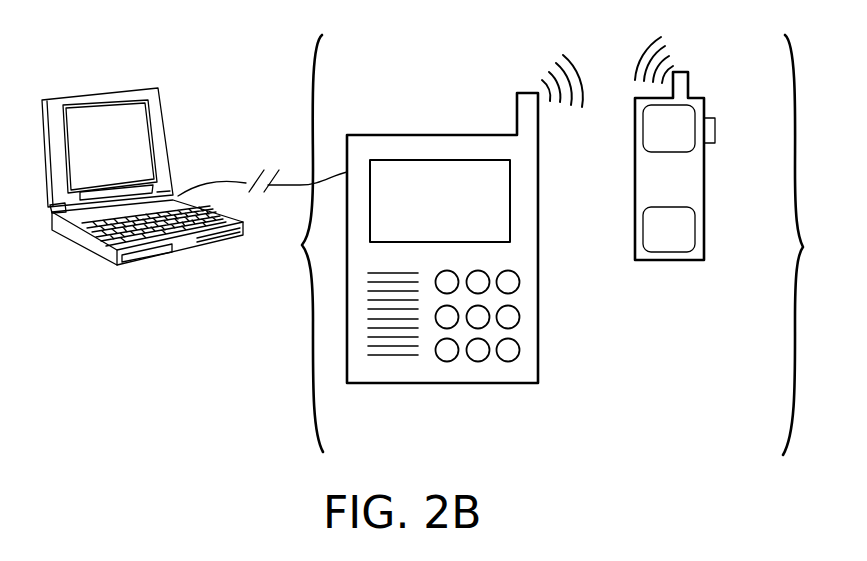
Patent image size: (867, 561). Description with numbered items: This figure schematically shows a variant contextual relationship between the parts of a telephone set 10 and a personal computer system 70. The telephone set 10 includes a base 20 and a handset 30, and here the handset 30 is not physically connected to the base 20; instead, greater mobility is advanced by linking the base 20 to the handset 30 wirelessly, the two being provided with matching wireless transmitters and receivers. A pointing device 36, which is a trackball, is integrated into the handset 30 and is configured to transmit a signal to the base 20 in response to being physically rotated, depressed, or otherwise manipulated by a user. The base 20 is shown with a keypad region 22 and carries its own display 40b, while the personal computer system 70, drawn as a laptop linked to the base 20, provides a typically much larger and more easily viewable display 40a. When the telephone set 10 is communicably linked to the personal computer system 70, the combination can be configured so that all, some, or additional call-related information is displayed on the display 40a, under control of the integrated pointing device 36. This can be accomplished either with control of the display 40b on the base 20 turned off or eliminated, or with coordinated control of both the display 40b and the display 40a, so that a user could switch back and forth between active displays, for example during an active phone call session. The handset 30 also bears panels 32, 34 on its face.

The telephone set 10 is at (248, 413).
The base 20 is at (489, 238).
The phone keypad 22 is at (543, 315).
The handset 30 is at (706, 167).
The device display 32 is at (682, 145).
The device control 34 is at (682, 241).
The pointing device 36 is at (715, 130).
The display 40a is at (100, 122).
The display 40b is at (455, 212).
The personal computer system 70 is at (135, 184).